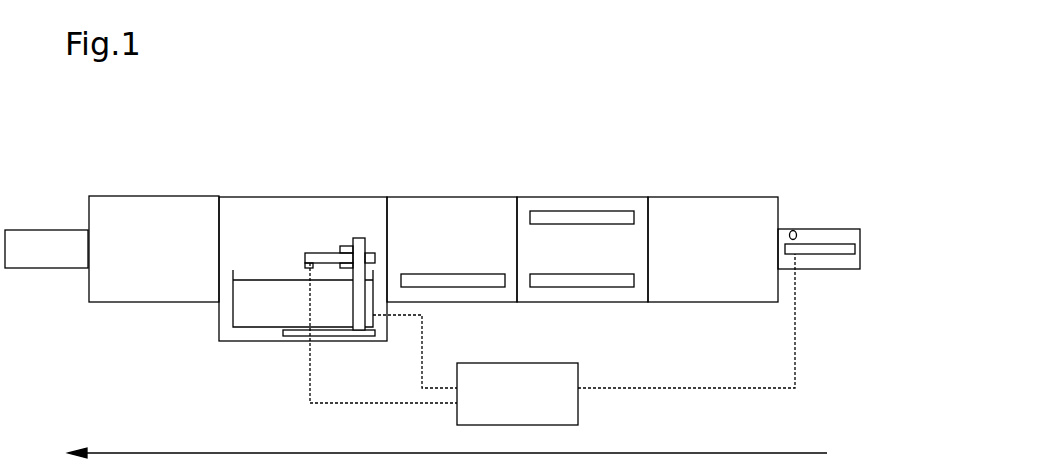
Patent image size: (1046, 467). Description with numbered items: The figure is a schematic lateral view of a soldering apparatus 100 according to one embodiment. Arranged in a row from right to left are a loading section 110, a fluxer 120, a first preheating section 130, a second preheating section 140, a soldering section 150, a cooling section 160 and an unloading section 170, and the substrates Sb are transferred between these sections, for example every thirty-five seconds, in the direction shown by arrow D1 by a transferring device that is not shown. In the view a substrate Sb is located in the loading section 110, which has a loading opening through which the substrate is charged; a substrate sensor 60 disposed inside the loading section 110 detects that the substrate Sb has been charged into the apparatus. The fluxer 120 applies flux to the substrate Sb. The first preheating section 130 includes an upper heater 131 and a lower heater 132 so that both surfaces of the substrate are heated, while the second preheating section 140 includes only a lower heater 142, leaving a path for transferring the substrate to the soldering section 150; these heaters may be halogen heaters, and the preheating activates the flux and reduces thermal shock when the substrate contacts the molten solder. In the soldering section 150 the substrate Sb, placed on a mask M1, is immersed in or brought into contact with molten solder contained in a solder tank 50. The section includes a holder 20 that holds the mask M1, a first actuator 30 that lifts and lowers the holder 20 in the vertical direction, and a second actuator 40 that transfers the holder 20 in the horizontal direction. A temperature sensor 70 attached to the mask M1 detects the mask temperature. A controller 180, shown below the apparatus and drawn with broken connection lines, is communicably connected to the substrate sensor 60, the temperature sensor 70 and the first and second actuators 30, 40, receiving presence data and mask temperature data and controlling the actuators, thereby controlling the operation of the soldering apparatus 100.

The soldering apparatus 100 is at (806, 105).
The loading section 110 is at (818, 228).
The fluxer 120 is at (708, 196).
The first preheating section 130 is at (580, 196).
The upper heater 131 is at (625, 216).
The lower heater 132 is at (625, 283).
The second preheating section 140 is at (450, 196).
The lower heater 142 is at (495, 283).
The soldering section 150 is at (300, 196).
The cooling section 160 is at (152, 195).
The unloading section 170 is at (45, 229).
The controller 180 is at (578, 418).
The holder 20 is at (330, 281).
The first actuator 30 is at (358, 320).
The second actuator 40 is at (290, 333).
The solder tank 50 is at (252, 318).
The substrate sensor 60 is at (792, 230).
The temperature sensor 70 is at (305, 263).
The mask M1 is at (318, 253).
The substrate Sb is at (858, 252).
The substrate transfer direction D1 is at (820, 450).